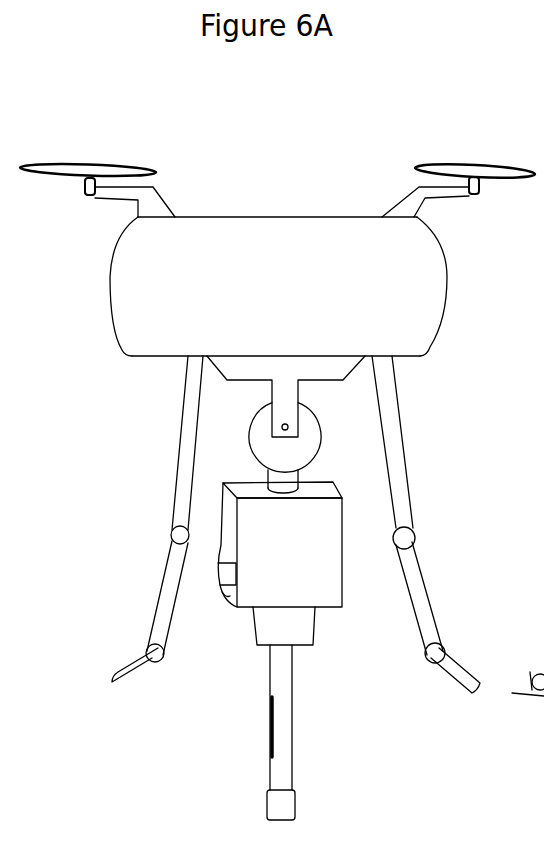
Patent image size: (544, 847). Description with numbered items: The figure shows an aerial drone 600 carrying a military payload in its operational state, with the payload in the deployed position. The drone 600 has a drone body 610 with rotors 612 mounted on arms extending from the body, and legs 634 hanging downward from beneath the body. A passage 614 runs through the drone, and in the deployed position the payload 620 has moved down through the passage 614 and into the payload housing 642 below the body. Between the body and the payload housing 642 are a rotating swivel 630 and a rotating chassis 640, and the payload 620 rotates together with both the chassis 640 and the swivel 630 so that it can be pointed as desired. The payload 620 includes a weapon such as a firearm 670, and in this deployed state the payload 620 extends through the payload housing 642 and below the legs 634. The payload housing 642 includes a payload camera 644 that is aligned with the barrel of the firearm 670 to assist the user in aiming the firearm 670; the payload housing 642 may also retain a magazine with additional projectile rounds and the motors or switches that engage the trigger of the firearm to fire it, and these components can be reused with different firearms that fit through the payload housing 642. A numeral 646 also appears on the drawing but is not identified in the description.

The aerial drone 600 is at (267, 168).
The drone body 610 is at (123, 297).
The rotors 612 is at (113, 165).
The passage 614 is at (463, 275).
The payload 620 is at (336, 747).
The rotating swivel 630 is at (228, 373).
The legs 634 is at (187, 498).
The rotating chassis 640 is at (320, 440).
The payload housing 642 is at (320, 583).
The payload camera 644 is at (218, 573).
The landing leg 646 is at (525, 586).
The firearm 670 is at (278, 757).